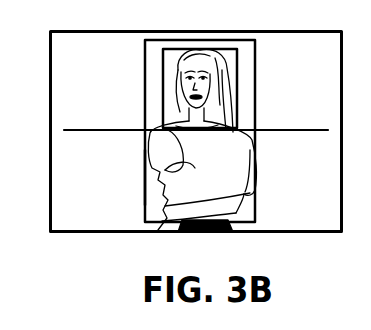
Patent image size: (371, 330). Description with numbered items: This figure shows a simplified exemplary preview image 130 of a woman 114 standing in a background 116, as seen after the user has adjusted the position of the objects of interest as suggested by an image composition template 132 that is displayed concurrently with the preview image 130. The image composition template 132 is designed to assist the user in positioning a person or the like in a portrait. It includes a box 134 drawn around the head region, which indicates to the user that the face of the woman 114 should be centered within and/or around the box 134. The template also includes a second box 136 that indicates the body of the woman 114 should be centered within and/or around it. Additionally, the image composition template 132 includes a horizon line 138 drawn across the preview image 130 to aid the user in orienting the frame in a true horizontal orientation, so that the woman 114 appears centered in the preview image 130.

The woman 114 is at (258, 162).
The background 116 is at (174, 132).
The preview image 130 is at (48, 118).
The image composition template 132 is at (138, 102).
The box 134 is at (244, 64).
The second box 136 is at (144, 173).
The horizon line 138 is at (110, 131).